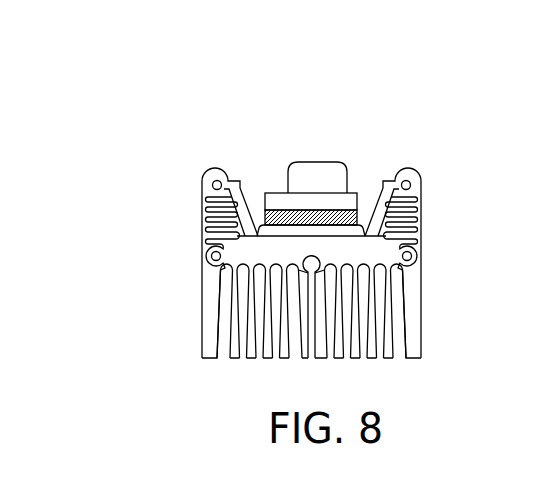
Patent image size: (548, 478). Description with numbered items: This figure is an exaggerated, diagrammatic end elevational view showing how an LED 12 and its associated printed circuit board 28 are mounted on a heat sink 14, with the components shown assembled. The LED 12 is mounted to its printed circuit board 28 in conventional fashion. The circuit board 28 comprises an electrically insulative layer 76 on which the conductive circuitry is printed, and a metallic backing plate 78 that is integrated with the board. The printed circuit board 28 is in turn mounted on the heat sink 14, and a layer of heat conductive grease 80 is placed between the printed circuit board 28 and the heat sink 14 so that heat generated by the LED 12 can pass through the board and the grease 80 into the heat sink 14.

The printed circuit board 28 is at (239, 60).
The LED 12 is at (322, 161).
The heat sink 14 is at (176, 312).
The electrically insulative layer 76 is at (357, 198).
The metallic backing plate 78 is at (250, 231).
The heat conductive grease 80 is at (370, 232).